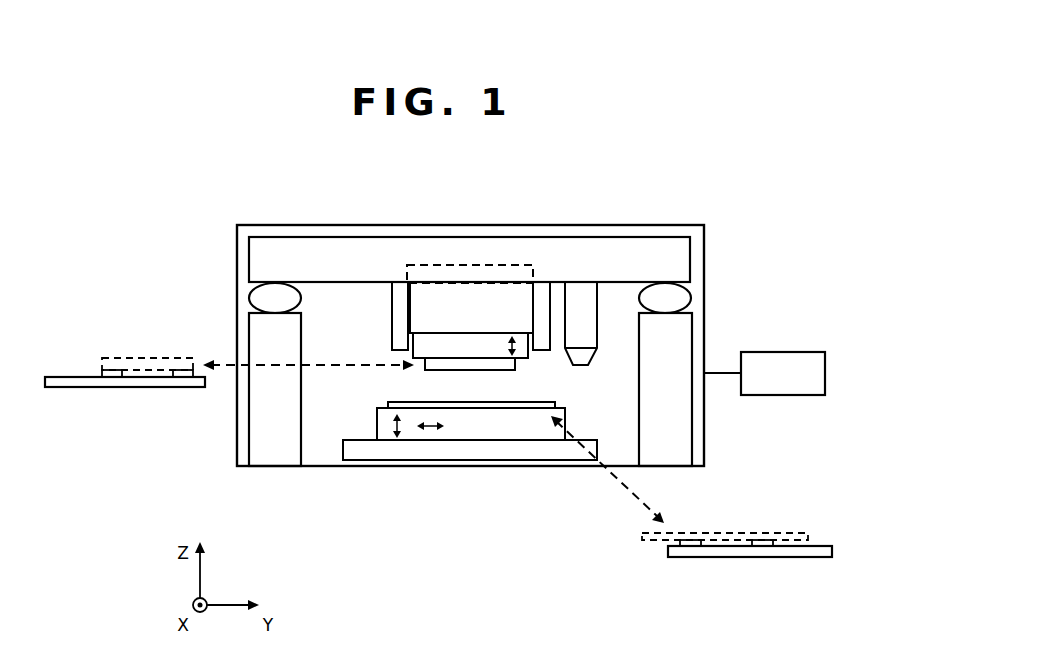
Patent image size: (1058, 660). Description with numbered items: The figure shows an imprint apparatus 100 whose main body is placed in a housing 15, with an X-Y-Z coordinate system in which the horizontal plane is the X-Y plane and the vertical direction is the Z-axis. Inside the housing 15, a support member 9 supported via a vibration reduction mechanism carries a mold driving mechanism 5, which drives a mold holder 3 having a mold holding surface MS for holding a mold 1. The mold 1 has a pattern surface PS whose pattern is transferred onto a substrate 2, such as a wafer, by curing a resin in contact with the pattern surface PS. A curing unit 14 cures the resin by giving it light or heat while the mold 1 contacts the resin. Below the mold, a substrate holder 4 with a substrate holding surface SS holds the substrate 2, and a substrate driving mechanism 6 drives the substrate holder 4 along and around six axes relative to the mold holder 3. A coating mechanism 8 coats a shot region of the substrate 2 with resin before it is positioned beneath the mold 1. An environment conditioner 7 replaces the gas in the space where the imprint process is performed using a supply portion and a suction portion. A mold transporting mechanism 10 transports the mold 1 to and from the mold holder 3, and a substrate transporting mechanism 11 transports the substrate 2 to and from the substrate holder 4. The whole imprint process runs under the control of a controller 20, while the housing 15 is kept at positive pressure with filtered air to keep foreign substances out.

The imprint apparatus 100 is at (370, 210).
The housing 15 is at (263, 225).
The support member 9 is at (598, 248).
The environment conditioner 7 is at (392, 310).
The mold driving mechanism 5 is at (465, 293).
The mold holder 3 is at (440, 342).
The curing unit 14 is at (520, 265).
The mold 1 is at (520, 363).
The coating mechanism 8 is at (585, 313).
The mold holding surface MS is at (420, 360).
The pattern surface PS is at (450, 386).
The substrate holding surface SS is at (384, 405).
The substrate 2 is at (400, 401).
The substrate holder 4 is at (377, 430).
The substrate driving mechanism 6 is at (372, 452).
The mold transporting mechanism 10 is at (113, 388).
The substrate transporting mechanism 11 is at (743, 558).
The controller 20 is at (775, 352).